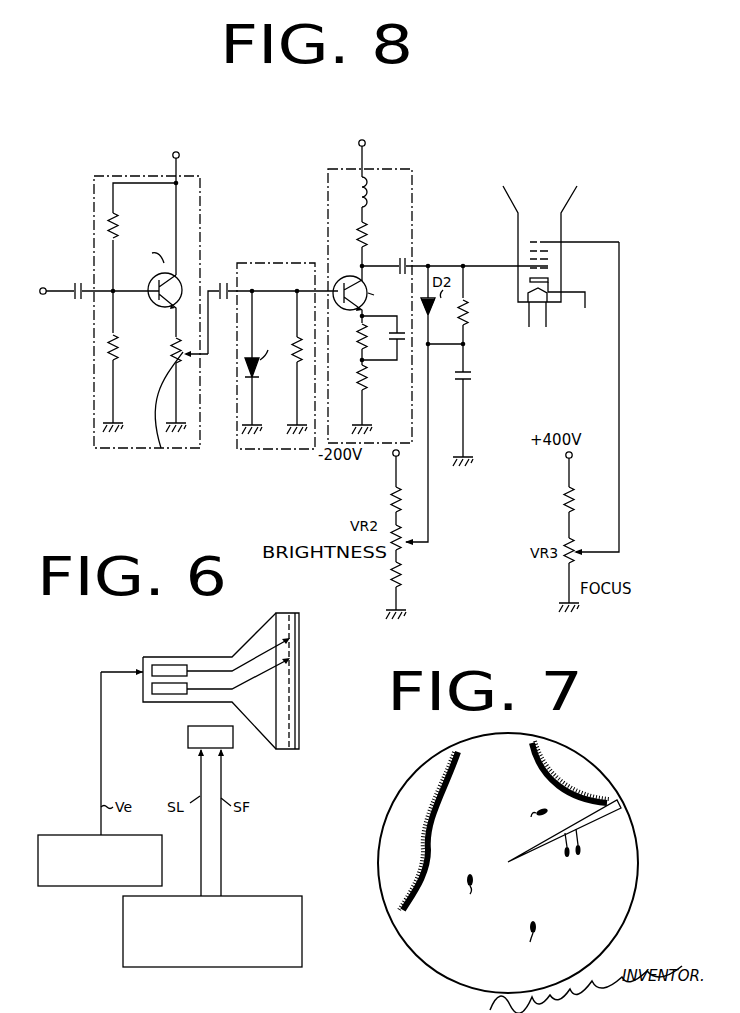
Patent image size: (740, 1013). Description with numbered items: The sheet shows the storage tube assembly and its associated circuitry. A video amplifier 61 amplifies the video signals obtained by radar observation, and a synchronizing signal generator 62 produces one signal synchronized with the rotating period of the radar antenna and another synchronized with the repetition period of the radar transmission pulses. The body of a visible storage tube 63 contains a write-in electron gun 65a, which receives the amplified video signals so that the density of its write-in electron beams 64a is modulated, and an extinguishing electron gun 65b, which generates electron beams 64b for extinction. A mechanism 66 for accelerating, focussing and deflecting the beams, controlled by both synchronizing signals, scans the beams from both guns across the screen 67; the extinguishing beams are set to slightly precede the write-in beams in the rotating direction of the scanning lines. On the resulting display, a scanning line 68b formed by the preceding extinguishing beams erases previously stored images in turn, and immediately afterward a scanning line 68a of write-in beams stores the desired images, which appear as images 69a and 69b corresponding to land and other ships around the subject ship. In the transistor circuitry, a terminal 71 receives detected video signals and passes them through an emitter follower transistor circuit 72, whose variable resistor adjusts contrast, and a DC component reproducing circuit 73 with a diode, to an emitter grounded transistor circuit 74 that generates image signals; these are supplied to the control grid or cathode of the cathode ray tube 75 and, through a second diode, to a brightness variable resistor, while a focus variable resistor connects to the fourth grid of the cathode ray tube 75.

In FIG. 8, the terminal 71 is at (45, 288).
In FIG. 8, the emitter follower transistor circuit 72 is at (203, 209).
In FIG. 8, the DC component reproducing circuit 73 is at (264, 269).
In FIG. 8, the emitter grounded transistor circuit 74 is at (413, 211).
In FIG. 8, the CRT 75 is at (512, 213).
In FIG. 6, the video amplifier 61 is at (68, 835).
In FIG. 6, the synchronizing signal generator 62 is at (302, 943).
In FIG. 6, the body of a visible storage tube 63 is at (137, 637).
In FIG. 6, the write-in electron beams 64a is at (242, 661).
In FIG. 6, the extinguishing electron beams 64b is at (250, 679).
In FIG. 6, the write-in electron gun 65a is at (183, 665).
In FIG. 6, the extinguishing electron gun 65b is at (180, 694).
In FIG. 6, the mechanism for accelerating, focussing and deflecting electron beams 66 is at (233, 740).
In FIG. 6, the screen 67 is at (298, 697).
In FIG. 7, the screen 67 is at (404, 790).
In FIG. 7, the scanning line 68a is at (612, 806).
In FIG. 7, the scanning line 68b is at (606, 822).
In FIG. 7, the images 69a is at (450, 790).
In FIG. 7, the images 69b is at (530, 951).